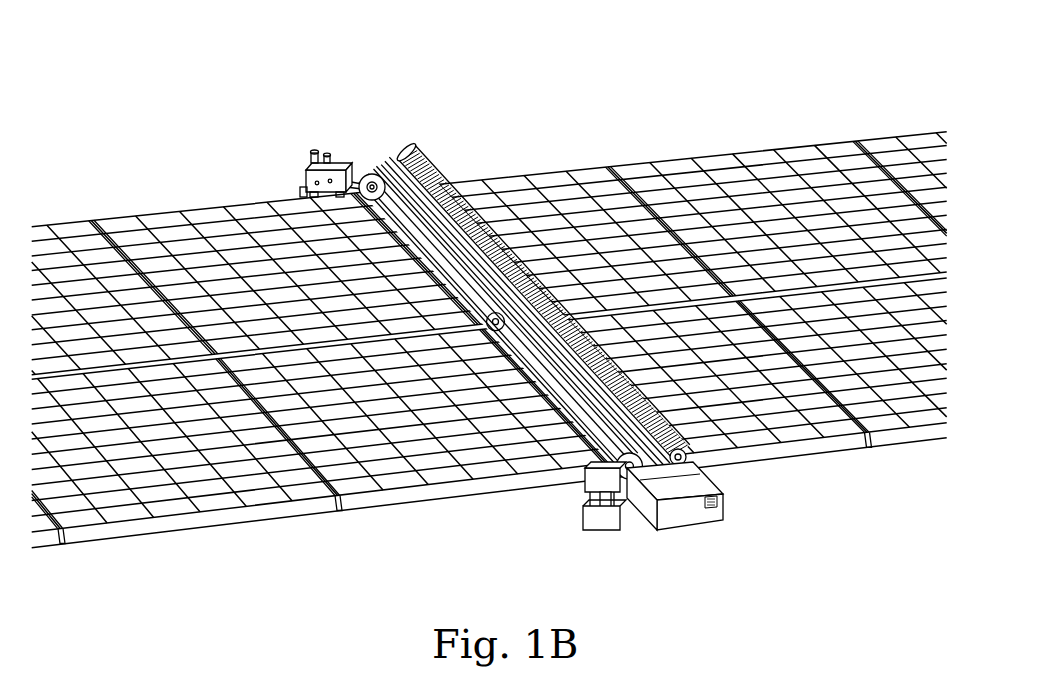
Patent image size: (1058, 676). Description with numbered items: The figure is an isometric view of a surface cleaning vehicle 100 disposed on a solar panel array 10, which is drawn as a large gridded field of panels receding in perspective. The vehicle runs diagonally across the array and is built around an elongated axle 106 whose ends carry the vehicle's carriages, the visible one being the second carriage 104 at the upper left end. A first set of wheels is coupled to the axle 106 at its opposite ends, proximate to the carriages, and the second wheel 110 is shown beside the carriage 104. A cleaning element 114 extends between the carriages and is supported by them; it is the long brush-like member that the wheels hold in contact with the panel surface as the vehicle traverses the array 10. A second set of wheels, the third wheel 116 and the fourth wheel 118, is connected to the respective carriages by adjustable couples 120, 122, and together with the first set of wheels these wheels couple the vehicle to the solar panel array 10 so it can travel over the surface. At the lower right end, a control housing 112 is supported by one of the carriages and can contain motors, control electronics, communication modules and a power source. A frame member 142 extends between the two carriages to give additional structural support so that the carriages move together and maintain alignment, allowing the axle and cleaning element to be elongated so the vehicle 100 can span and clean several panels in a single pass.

The solar panel array 10 is at (713, 105).
The surface cleaning vehicle 100 is at (496, 339).
The second carriage 104 is at (344, 164).
The axle 106 is at (547, 373).
The second wheel 110 is at (375, 172).
The control housing 112 is at (705, 532).
The cleaning element 114 is at (450, 181).
The third wheel 116 is at (598, 543).
The fourth wheel 118 is at (299, 193).
The adjustable couple 120 is at (608, 543).
The adjustable couple 122 is at (312, 134).
The frame member 142 is at (456, 292).